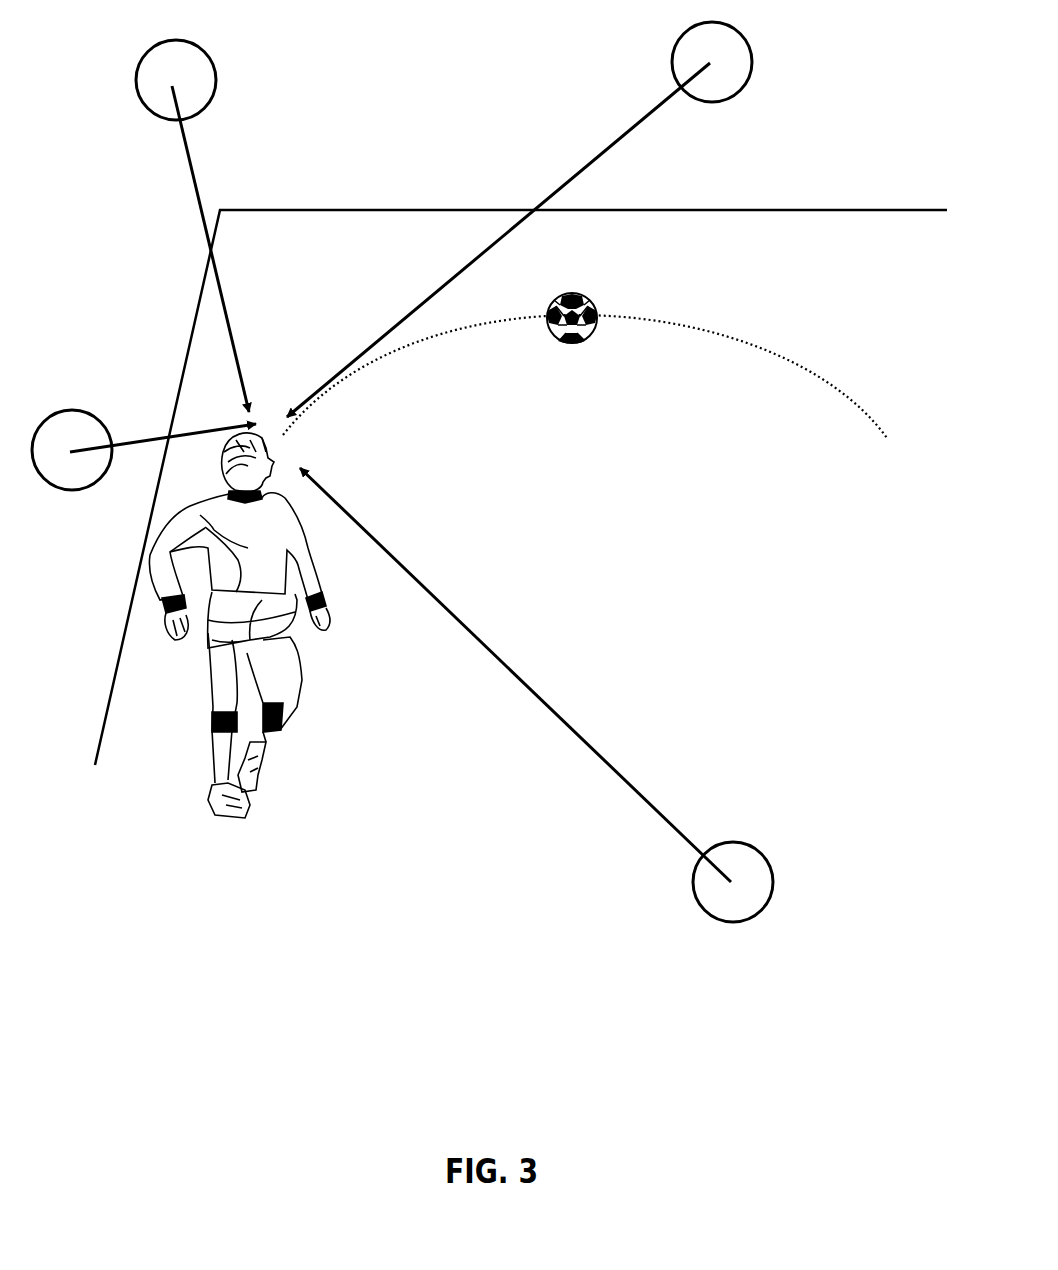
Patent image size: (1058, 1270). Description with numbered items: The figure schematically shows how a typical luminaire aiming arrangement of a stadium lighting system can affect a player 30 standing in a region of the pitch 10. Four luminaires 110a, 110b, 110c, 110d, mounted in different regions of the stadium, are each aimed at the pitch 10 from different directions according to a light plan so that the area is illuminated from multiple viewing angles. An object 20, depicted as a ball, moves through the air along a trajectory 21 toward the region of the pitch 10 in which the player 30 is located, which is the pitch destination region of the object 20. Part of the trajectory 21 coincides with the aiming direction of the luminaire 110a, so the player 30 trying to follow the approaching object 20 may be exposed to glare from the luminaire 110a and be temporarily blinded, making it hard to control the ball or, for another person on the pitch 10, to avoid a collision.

The pitch 10 is at (330, 230).
The object 20 is at (572, 345).
The trajectory 21 is at (748, 342).
The player 30 is at (225, 815).
The luminaire 110a is at (710, 82).
The luminaire 110b is at (153, 89).
The luminaire 110c is at (72, 480).
The luminaire 110d is at (735, 905).